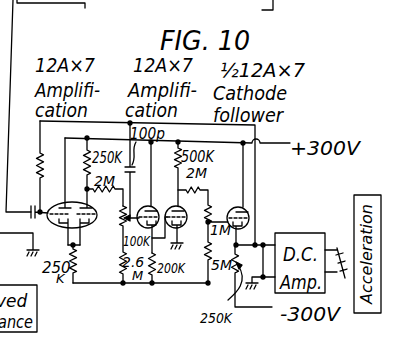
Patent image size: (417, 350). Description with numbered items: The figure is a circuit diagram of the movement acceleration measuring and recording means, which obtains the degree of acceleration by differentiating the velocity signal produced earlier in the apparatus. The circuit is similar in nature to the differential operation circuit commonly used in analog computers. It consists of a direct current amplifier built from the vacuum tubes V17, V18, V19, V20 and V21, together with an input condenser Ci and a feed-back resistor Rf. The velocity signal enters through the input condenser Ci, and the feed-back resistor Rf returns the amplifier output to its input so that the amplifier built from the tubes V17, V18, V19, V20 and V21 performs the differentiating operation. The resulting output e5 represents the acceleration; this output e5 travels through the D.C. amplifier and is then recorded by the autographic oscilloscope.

The vacuum tube V17 is at (57, 191).
The vacuum tube V18 is at (93, 217).
The vacuum tube V19 is at (144, 197).
The vacuum tube V20 is at (185, 195).
The vacuum tube V21 is at (234, 194).
The feed-back resistor Rf is at (46, 166).
The input condenser Ci is at (32, 214).
The output e5 is at (260, 262).